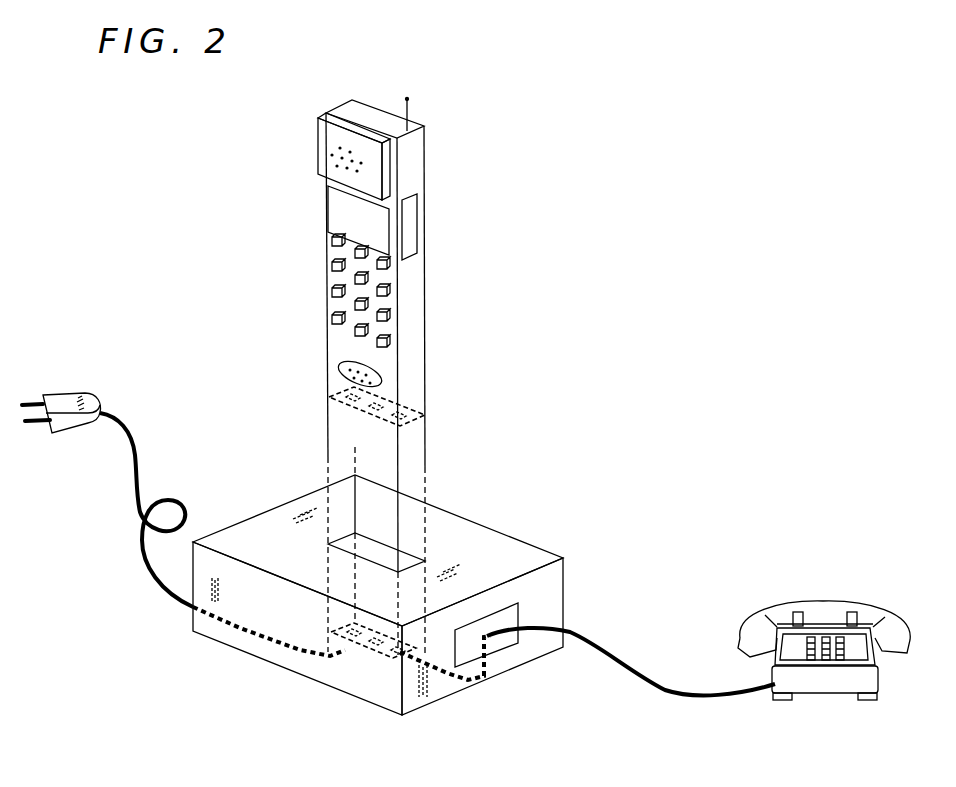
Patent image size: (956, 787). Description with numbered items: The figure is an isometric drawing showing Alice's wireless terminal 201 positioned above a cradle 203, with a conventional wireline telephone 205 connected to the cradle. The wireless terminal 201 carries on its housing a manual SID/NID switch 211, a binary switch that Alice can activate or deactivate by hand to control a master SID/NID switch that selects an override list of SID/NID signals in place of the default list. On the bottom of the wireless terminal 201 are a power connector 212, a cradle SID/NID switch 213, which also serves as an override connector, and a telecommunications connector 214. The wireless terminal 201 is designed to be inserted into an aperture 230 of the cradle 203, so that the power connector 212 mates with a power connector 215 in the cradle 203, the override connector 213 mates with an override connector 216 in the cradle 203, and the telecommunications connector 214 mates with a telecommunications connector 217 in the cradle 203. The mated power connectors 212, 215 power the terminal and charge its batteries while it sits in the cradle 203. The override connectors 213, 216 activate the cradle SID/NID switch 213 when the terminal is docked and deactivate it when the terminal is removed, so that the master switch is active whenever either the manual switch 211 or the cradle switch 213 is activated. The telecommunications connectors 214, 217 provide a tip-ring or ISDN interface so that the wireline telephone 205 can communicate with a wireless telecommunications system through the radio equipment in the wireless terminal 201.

The wireless terminal 201 is at (421, 303).
The manual SID/NID switch 211 is at (410, 213).
The power connector 212 is at (334, 395).
The cradle SID/NID switch 213 is at (373, 411).
The telecommunications connector 214 is at (412, 420).
The cradle 203 is at (508, 663).
The aperture 230 is at (335, 540).
The power connector 215 is at (337, 627).
The override connector 216 is at (353, 652).
The telecommunications connector 217 is at (388, 657).
The wireline telephone 205 is at (823, 603).